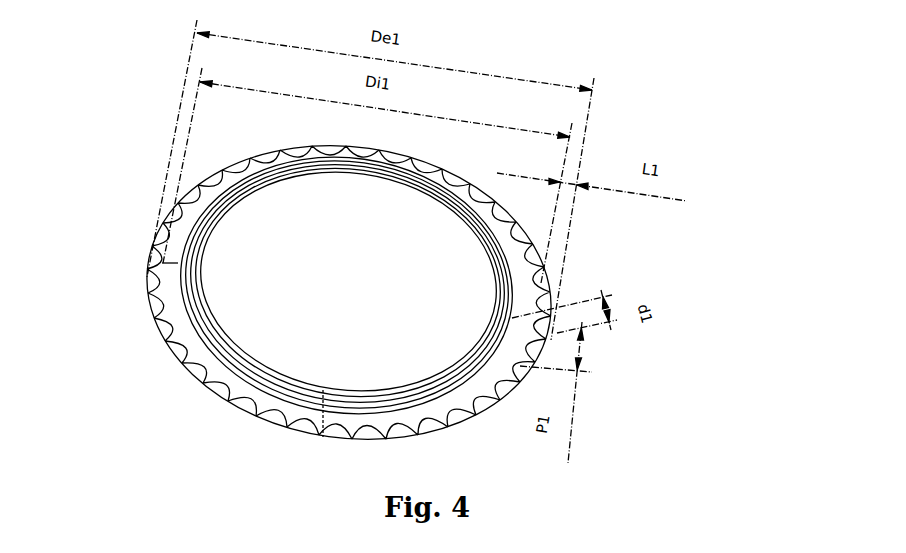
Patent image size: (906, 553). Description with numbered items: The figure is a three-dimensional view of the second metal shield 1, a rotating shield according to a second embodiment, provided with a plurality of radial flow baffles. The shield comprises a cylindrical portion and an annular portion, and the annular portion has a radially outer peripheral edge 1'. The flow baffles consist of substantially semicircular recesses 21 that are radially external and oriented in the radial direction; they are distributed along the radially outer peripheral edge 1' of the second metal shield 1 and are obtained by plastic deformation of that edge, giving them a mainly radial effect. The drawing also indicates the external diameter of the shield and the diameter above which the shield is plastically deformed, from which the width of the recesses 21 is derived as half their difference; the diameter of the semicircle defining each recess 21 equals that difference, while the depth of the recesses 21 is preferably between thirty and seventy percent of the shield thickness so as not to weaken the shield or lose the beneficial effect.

The second metal shield 1 is at (449, 253).
The radially outer peripheral edge 1' is at (346, 285).
The semicircular recesses 21 is at (141, 335).